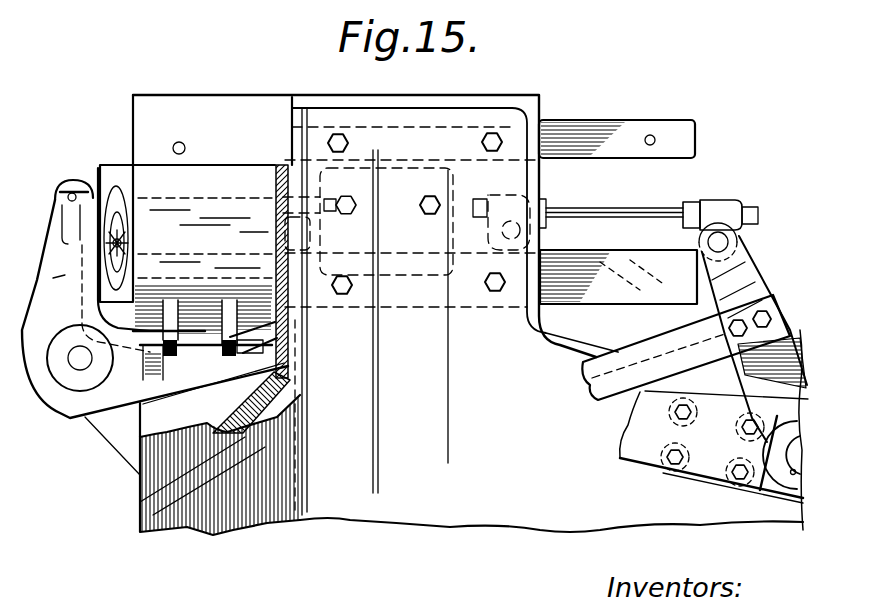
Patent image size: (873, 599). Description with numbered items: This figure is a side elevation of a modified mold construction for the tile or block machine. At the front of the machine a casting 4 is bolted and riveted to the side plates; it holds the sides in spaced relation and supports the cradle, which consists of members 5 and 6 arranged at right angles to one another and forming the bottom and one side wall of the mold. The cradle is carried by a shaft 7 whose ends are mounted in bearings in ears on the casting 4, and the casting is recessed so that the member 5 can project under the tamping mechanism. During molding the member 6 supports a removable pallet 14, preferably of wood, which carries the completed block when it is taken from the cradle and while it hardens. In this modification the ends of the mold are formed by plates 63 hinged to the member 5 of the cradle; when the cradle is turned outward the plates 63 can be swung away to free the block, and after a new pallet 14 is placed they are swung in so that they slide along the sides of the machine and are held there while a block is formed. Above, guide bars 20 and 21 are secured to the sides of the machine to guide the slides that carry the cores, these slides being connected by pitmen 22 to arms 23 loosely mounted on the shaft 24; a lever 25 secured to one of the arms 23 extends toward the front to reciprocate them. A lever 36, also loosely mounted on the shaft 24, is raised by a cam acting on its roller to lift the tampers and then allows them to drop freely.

The casting 4 is at (152, 422).
The cradle member 5 is at (200, 337).
The cradle member 6 is at (52, 238).
The shaft 7 is at (85, 369).
The removable pallet 14 is at (108, 180).
The plates 63 is at (220, 183).
The guide bar 20 is at (577, 132).
The guide bar 21 is at (600, 262).
The pitmen 22 is at (630, 215).
The arms 23 is at (736, 273).
The shaft 24 is at (793, 473).
The lever 25 is at (683, 345).
The lever 36 is at (632, 452).